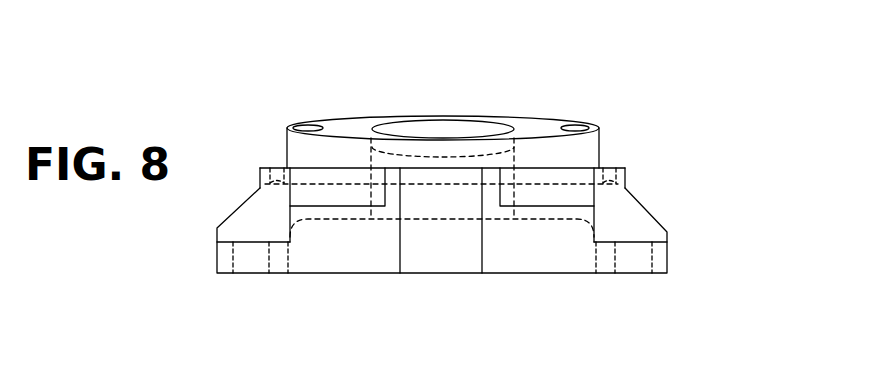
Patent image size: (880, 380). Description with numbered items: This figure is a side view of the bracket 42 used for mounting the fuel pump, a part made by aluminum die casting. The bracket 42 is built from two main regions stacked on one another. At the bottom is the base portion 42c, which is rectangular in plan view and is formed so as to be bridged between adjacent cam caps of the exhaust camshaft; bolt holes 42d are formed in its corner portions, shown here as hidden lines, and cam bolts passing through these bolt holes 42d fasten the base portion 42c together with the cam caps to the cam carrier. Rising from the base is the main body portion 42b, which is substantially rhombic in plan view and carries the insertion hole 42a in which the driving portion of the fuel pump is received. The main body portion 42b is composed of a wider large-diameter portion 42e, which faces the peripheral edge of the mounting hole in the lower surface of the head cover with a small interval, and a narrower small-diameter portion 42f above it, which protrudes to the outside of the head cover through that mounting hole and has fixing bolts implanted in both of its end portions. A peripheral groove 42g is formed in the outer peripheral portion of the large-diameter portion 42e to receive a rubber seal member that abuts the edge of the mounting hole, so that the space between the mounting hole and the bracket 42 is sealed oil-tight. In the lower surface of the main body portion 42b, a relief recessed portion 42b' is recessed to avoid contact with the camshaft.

The bracket 42 is at (556, 98).
The insertion hole 42a is at (457, 132).
The main body portion 42b is at (498, 129).
The relief recessed portion 42b' is at (442, 280).
The base portion 42c is at (667, 260).
The bolt holes 42d is at (235, 250).
The large-diameter portion 42e is at (625, 178).
The small-diameter portion 42f is at (600, 138).
The peripheral groove 42g is at (278, 170).